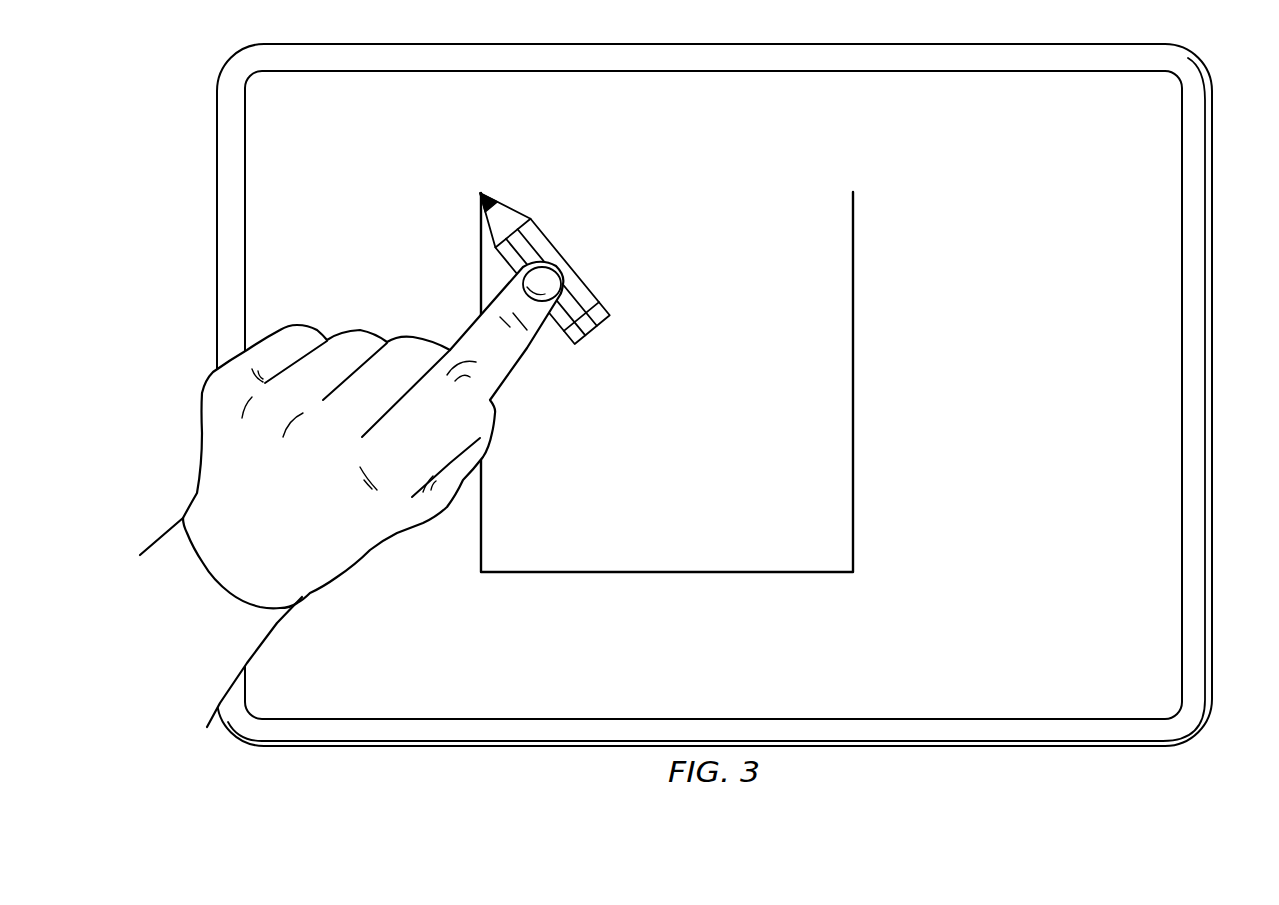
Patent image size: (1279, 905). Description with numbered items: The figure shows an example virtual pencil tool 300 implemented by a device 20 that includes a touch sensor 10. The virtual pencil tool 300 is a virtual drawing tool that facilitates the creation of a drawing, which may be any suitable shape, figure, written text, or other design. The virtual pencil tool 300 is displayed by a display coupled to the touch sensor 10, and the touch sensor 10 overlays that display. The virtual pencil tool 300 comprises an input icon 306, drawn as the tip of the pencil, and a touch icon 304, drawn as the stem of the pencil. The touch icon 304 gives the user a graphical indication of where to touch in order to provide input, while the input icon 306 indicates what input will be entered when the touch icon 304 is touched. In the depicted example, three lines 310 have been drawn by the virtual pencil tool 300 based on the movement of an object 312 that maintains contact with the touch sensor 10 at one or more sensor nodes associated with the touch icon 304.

The touch sensor 10 is at (1182, 208).
The device 20 is at (1212, 266).
The virtual pencil tool 300 is at (545, 249).
The touch icon 304 is at (591, 298).
The input icon 306 is at (480, 193).
The lines 310 is at (480, 263).
The object 312 is at (521, 361).